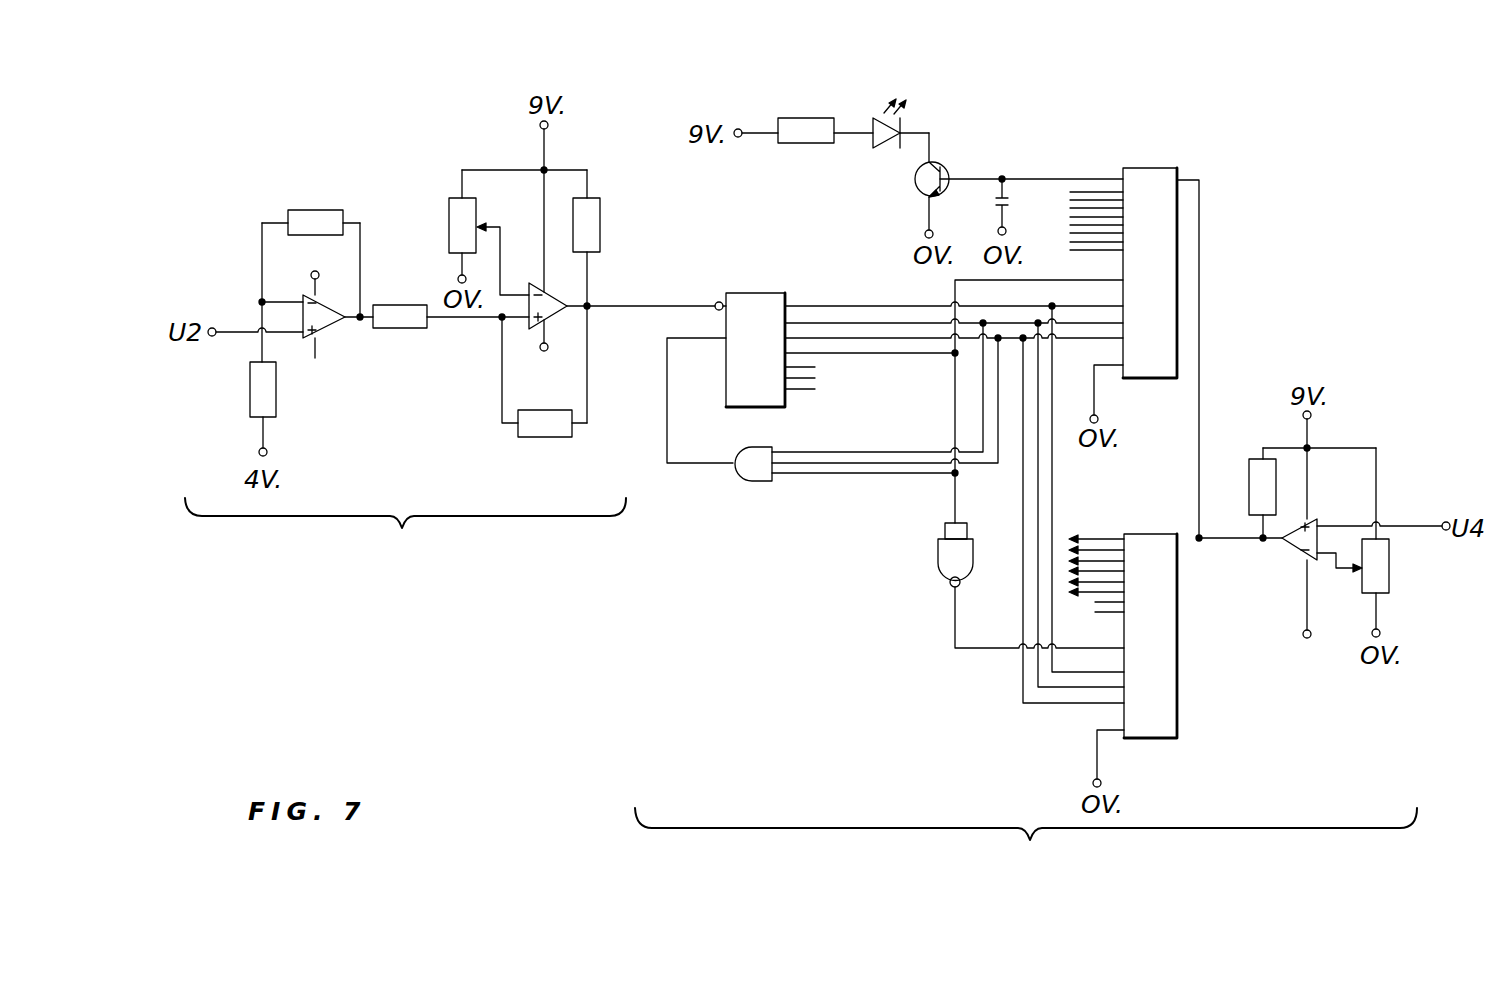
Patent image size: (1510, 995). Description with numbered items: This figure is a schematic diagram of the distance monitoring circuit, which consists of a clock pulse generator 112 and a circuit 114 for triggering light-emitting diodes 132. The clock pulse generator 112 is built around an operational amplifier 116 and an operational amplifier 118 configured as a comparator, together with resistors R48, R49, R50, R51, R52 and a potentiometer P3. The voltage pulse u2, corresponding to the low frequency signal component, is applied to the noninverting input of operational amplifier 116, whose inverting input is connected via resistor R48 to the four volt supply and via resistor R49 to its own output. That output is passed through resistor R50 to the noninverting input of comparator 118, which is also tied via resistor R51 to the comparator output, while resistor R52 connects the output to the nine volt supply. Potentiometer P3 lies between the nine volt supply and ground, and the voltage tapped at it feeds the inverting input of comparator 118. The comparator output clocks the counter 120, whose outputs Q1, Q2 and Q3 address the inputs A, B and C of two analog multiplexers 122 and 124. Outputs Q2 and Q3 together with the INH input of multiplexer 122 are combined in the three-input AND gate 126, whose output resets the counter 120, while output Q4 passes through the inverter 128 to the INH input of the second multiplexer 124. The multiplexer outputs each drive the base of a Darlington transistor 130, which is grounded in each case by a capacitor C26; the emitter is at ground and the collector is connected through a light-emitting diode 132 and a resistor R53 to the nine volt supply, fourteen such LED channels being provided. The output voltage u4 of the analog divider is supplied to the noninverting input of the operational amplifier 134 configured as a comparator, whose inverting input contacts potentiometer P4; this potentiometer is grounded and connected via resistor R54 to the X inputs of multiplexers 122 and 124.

The clock pulse generator 112 is at (405, 531).
The circuit for triggering light-emitting diodes 114 is at (1026, 843).
The operational amplifier 116 is at (325, 335).
The operational amplifier configured as a comparator 118 is at (556, 298).
The counter 120 is at (760, 292).
The analog multiplexer 122 is at (1152, 168).
The analog multiplexer 124 is at (1160, 534).
The three-input AND gate 126 is at (763, 447).
The inverter 128 is at (938, 545).
The Darlington transistor 130 is at (945, 162).
The light-emitting diode 132 is at (888, 150).
The operational amplifier configured as a comparator 134 is at (1296, 553).
The resistor R48 is at (237, 409).
The resistor R49 is at (311, 249).
The resistor R50 is at (451, 302).
The resistor R51 is at (544, 377).
The resistor R52 is at (613, 296).
The resistor R53 is at (824, 116).
The resistor R54 is at (1249, 468).
The potentiometer P3 is at (471, 232).
The potentiometer P4 is at (1387, 542).
The capacitor C26 is at (1028, 205).